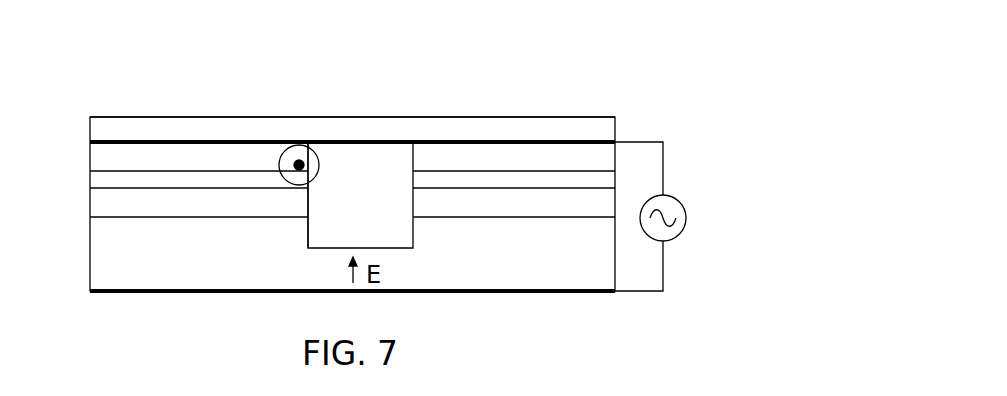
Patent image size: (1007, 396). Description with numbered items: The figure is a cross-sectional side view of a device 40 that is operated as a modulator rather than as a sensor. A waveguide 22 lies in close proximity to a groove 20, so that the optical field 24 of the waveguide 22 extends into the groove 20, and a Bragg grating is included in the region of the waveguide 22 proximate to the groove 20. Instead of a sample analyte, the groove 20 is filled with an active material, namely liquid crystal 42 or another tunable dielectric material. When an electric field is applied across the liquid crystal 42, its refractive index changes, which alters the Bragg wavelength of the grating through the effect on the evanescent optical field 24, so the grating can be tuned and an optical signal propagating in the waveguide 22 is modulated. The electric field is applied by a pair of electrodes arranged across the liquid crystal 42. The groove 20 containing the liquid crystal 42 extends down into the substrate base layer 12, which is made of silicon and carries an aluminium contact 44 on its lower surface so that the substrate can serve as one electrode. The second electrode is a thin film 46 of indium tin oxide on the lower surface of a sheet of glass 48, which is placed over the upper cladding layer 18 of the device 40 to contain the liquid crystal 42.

The substrate base layer 12 is at (98, 245).
The upper cladding layer 18 is at (98, 158).
The groove 20 is at (387, 157).
The waveguide 22 is at (300, 143).
The optical field 24 is at (290, 158).
The device 40 is at (653, 93).
The liquid crystal 42 is at (345, 208).
The aluminium contact 44 is at (88, 291).
The thin film of indium tin oxide 46 is at (443, 138).
The sheet of glass 48 is at (556, 130).